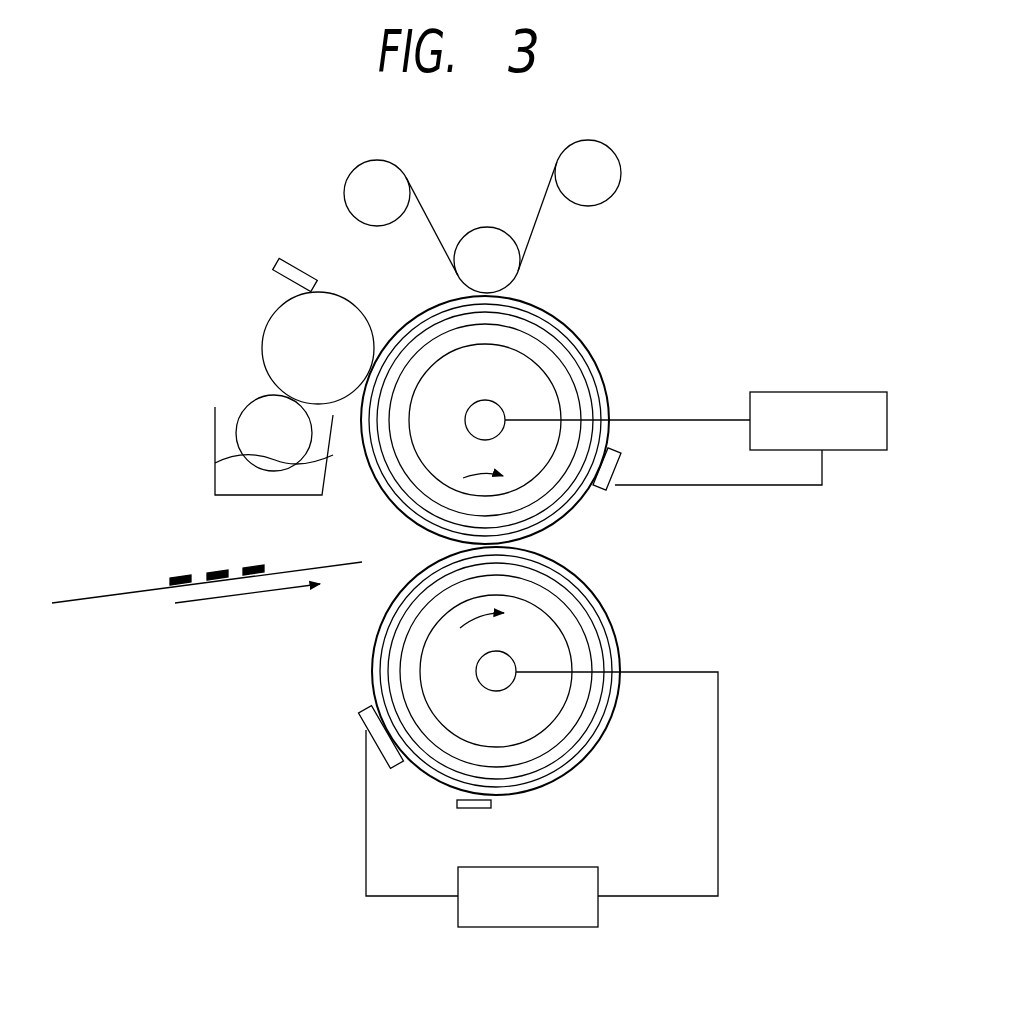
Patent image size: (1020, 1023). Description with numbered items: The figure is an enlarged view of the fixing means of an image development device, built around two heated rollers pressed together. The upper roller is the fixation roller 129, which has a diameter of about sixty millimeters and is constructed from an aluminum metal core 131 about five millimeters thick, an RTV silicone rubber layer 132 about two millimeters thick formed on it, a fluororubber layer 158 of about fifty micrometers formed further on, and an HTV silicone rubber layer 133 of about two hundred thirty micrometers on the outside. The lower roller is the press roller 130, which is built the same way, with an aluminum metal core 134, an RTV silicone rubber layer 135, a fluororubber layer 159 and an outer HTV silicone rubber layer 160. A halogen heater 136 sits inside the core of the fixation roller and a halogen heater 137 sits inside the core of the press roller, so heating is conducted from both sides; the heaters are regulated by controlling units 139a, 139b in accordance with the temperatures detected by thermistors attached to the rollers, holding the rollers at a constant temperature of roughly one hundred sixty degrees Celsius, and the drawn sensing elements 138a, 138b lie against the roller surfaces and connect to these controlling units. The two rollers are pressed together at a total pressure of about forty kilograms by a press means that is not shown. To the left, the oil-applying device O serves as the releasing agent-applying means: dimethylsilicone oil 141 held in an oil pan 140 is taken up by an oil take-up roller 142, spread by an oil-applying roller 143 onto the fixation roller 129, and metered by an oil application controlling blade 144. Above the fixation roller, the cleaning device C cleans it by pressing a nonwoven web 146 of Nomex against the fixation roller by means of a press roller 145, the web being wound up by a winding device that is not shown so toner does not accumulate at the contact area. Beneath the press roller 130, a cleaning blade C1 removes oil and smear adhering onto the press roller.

The fixation roller 129 is at (522, 397).
The press roller 130 is at (490, 652).
The aluminum metal core 131 is at (577, 378).
The RTV silicone rubber layer 132 is at (597, 380).
The HTV silicone rubber layer 133 is at (610, 410).
The aluminum metal core 134 is at (577, 708).
The RTV silicone rubber layer 135 is at (593, 642).
The halogen heater 136 is at (470, 432).
The halogen heater 137 is at (474, 672).
The heater for first drum 138a is at (622, 467).
The heater for second drum 138b is at (367, 720).
The controlling unit 139a is at (826, 392).
The controlling unit 139b is at (562, 928).
The oil pan 140 is at (215, 443).
The dimethylsilicone oil 141 is at (237, 485).
The oil take-up roller 142 is at (255, 410).
The oil-applying roller 143 is at (275, 333).
The oil application controlling blade 144 is at (297, 268).
The press roller 145 is at (497, 243).
The nonwoven web 146 is at (434, 218).
The fluororubber layer 158 is at (600, 392).
The fluororubber layer 159 is at (600, 618).
The HTV silicone rubber layer 160 is at (595, 590).
The cleaning device C is at (624, 152).
The cleaning blade C1 is at (462, 810).
The oil-applying device O is at (218, 316).